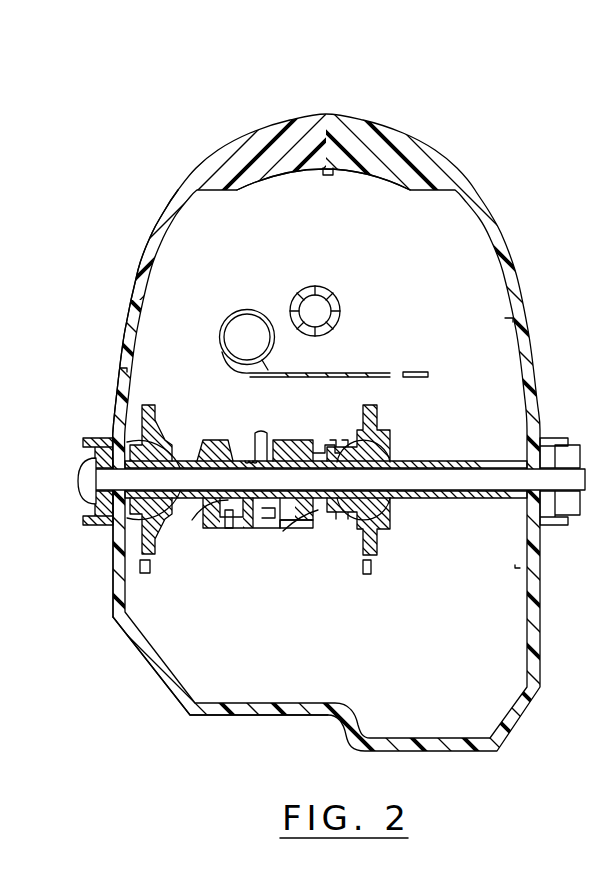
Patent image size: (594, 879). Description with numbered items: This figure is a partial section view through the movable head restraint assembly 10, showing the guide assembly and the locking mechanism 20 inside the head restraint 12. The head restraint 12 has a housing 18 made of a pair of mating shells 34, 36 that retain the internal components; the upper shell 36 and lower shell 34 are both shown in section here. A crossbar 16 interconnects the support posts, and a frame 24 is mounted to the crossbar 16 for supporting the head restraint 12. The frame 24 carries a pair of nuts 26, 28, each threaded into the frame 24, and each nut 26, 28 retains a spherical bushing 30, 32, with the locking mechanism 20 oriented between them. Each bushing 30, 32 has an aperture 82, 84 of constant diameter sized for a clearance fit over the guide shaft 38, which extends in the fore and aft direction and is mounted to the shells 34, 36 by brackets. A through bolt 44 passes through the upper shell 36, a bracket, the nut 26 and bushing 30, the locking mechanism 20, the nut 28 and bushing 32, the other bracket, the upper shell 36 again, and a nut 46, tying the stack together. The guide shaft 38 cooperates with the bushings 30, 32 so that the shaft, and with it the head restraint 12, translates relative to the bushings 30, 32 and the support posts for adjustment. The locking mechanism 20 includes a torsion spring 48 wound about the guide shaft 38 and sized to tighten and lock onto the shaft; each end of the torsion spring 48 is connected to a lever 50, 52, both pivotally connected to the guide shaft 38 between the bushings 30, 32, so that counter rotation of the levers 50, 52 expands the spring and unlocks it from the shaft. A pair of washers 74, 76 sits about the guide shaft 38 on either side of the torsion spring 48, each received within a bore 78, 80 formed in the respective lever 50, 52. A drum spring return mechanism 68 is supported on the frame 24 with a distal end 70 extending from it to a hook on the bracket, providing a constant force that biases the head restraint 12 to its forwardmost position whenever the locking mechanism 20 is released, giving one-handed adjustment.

The head restraint assembly 10 is at (512, 107).
The head restraint 12 is at (404, 142).
The housing 18 is at (122, 270).
The upper shell 36 is at (223, 157).
The shell 34 is at (147, 670).
The distal end 70 is at (410, 370).
The drum spring return mechanism 68 is at (242, 307).
The crossbar 16 is at (341, 306).
The nut 26 is at (137, 443).
The bushing 30 is at (140, 500).
The guide shaft 38 is at (487, 467).
The nut 46 is at (572, 498).
The frame 24 is at (148, 408).
The aperture 82 is at (178, 468).
The nut 28 is at (390, 440).
The aperture 84 is at (388, 462).
The bushing 32 is at (372, 497).
The washer 74 is at (204, 498).
The bore 78 is at (252, 452).
The bore 80 is at (267, 458).
The locking mechanism 20 is at (265, 540).
The washer 76 is at (322, 513).
The lever 50 is at (225, 524).
The torsion spring 48 is at (233, 508).
The lever 52 is at (280, 525).
The through bolt 44 is at (80, 482).